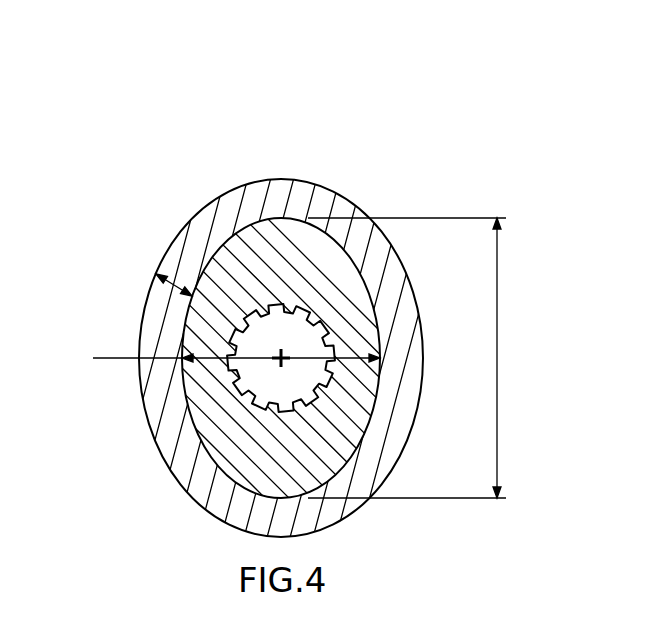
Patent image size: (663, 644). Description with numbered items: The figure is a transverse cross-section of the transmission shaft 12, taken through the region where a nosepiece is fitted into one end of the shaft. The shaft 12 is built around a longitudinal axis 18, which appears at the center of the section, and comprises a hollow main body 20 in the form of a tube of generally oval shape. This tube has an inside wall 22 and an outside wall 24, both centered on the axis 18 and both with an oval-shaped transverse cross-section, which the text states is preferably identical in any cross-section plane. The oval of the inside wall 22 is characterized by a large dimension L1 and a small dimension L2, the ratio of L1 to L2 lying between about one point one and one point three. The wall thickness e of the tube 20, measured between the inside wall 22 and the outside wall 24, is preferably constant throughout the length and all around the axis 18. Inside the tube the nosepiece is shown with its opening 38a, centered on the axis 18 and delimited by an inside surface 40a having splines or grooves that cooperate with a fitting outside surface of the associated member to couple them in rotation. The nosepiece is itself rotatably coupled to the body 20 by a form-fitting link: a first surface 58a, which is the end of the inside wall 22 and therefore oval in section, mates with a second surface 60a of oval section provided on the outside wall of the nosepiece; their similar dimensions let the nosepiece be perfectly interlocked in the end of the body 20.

The shaft 12 is at (382, 195).
The longitudinal axis 18 is at (353, 345).
The hollow main body 20 is at (228, 335).
The inside wall 22 is at (277, 309).
The outside wall 24 is at (184, 226).
The opening 38a is at (353, 345).
The inside surface 40a is at (322, 330).
The first surface 58a is at (246, 218).
The second surface 60a is at (284, 220).
The thickness e is at (159, 276).
The large dimension L1 is at (420, 358).
The small dimension L2 is at (236, 348).